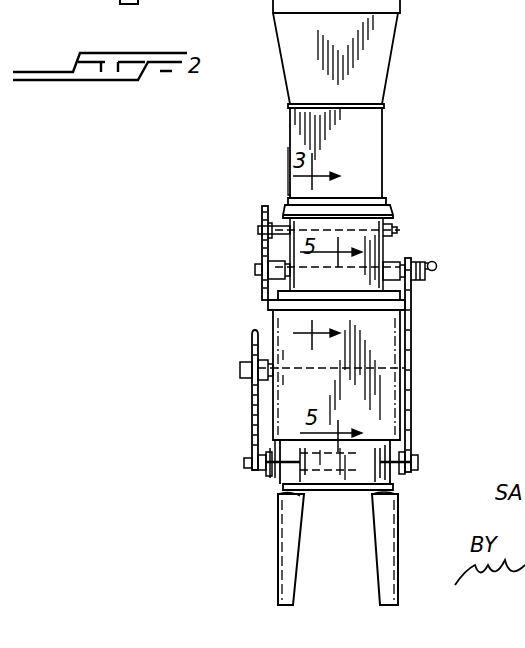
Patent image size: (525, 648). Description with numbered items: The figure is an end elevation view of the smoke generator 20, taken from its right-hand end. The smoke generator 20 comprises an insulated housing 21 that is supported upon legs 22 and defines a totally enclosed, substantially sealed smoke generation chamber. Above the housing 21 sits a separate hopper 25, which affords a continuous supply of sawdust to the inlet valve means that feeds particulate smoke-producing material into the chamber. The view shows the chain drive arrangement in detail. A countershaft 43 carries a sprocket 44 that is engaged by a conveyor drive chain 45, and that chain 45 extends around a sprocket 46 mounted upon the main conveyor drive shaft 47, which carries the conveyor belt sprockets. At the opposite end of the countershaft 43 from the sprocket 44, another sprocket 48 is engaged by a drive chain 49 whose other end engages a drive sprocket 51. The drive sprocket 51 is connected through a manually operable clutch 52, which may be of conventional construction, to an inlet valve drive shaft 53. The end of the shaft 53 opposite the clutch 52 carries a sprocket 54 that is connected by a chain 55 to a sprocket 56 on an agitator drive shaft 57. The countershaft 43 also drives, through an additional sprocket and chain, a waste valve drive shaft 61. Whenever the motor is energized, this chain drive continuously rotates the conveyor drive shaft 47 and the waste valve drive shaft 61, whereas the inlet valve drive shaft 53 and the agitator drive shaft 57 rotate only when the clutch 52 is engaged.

The smoke generator 20 is at (430, 184).
The housing 21 is at (385, 340).
The legs 22 is at (378, 543).
The hopper 25 is at (375, 65).
The countershaft 43 is at (262, 478).
The sprocket 44 is at (252, 470).
The conveyor drive chain 45 is at (252, 418).
The sprocket 46 is at (253, 345).
The main conveyor drive shaft 47 is at (242, 372).
The sprocket 48 is at (412, 468).
The drive chain 49 is at (411, 435).
The drive sprocket 51 is at (408, 260).
The manually operable clutch 52 is at (428, 262).
The inlet valve drive shaft 53 is at (272, 280).
The sprocket 54 is at (258, 276).
The chain 55 is at (262, 256).
The sprocket 56 is at (264, 210).
The agitator drive shaft 57 is at (262, 229).
The waste valve drive shaft 61 is at (258, 458).